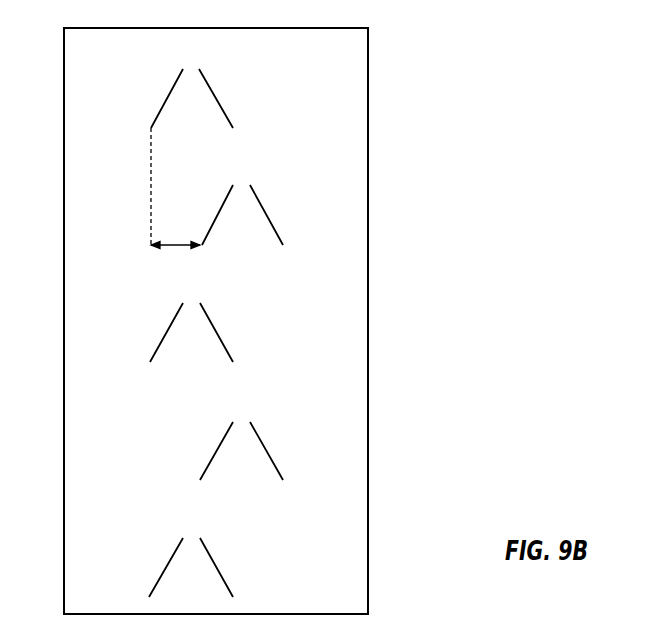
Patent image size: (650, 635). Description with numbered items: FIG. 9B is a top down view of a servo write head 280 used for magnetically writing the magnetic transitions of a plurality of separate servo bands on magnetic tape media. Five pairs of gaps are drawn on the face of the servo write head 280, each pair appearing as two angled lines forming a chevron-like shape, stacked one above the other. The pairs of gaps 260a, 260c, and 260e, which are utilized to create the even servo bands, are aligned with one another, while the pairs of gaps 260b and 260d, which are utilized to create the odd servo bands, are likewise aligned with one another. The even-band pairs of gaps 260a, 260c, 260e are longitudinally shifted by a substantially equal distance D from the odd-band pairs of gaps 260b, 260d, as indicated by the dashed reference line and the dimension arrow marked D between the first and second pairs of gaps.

The servo write head 280 is at (337, 28).
The pair of gaps 260a is at (218, 98).
The pair of gaps 260b is at (267, 217).
The pair of gaps 260c is at (218, 332).
The pair of gaps 260d is at (268, 450).
The pair of gaps 260e is at (218, 568).
The distance D is at (176, 244).